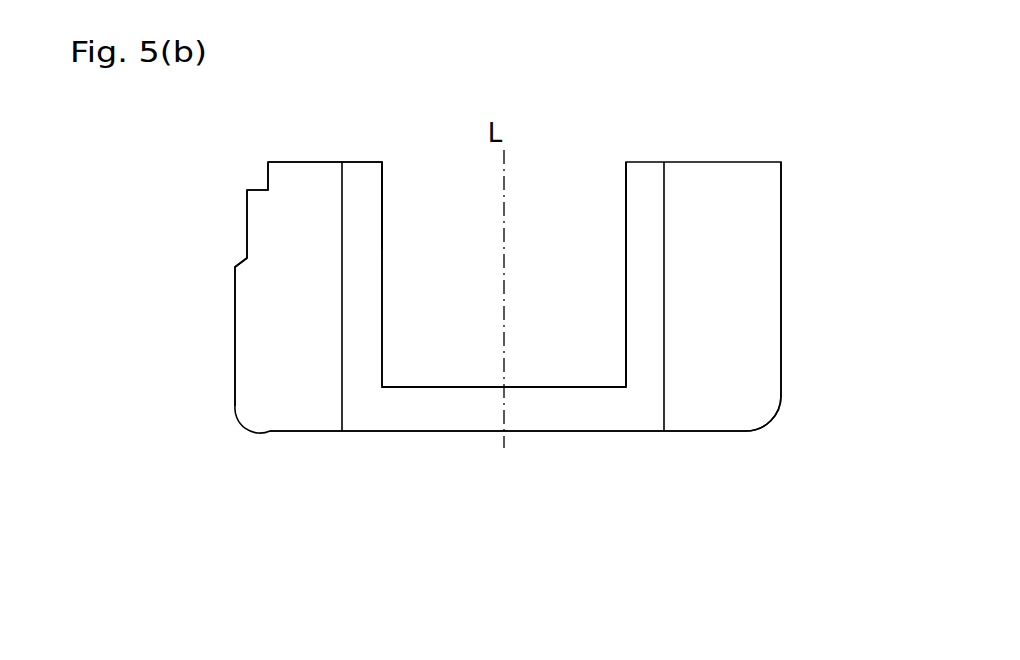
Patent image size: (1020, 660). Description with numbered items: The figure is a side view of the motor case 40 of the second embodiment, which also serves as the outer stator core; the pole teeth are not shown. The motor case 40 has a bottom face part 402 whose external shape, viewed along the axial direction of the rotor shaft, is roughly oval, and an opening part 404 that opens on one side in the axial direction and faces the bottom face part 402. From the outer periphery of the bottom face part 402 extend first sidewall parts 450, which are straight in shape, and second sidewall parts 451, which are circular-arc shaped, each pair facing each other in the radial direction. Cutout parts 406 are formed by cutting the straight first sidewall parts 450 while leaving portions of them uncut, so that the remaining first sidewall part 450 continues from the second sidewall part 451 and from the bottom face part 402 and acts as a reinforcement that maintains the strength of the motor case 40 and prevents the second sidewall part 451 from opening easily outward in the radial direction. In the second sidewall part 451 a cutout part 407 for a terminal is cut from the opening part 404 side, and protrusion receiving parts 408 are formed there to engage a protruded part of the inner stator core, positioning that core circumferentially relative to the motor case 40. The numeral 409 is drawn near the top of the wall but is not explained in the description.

The motor case 40 is at (779, 73).
The bottom face part 402 is at (430, 432).
The opening part 404 is at (549, 141).
The cutout part 406 is at (623, 239).
The cutout part for terminal 407 is at (247, 262).
The protrusion receiving part 408 is at (253, 191).
The top surface 409 is at (394, 186).
The first sidewall part 450 is at (358, 203).
The second sidewall part 451 is at (762, 268).